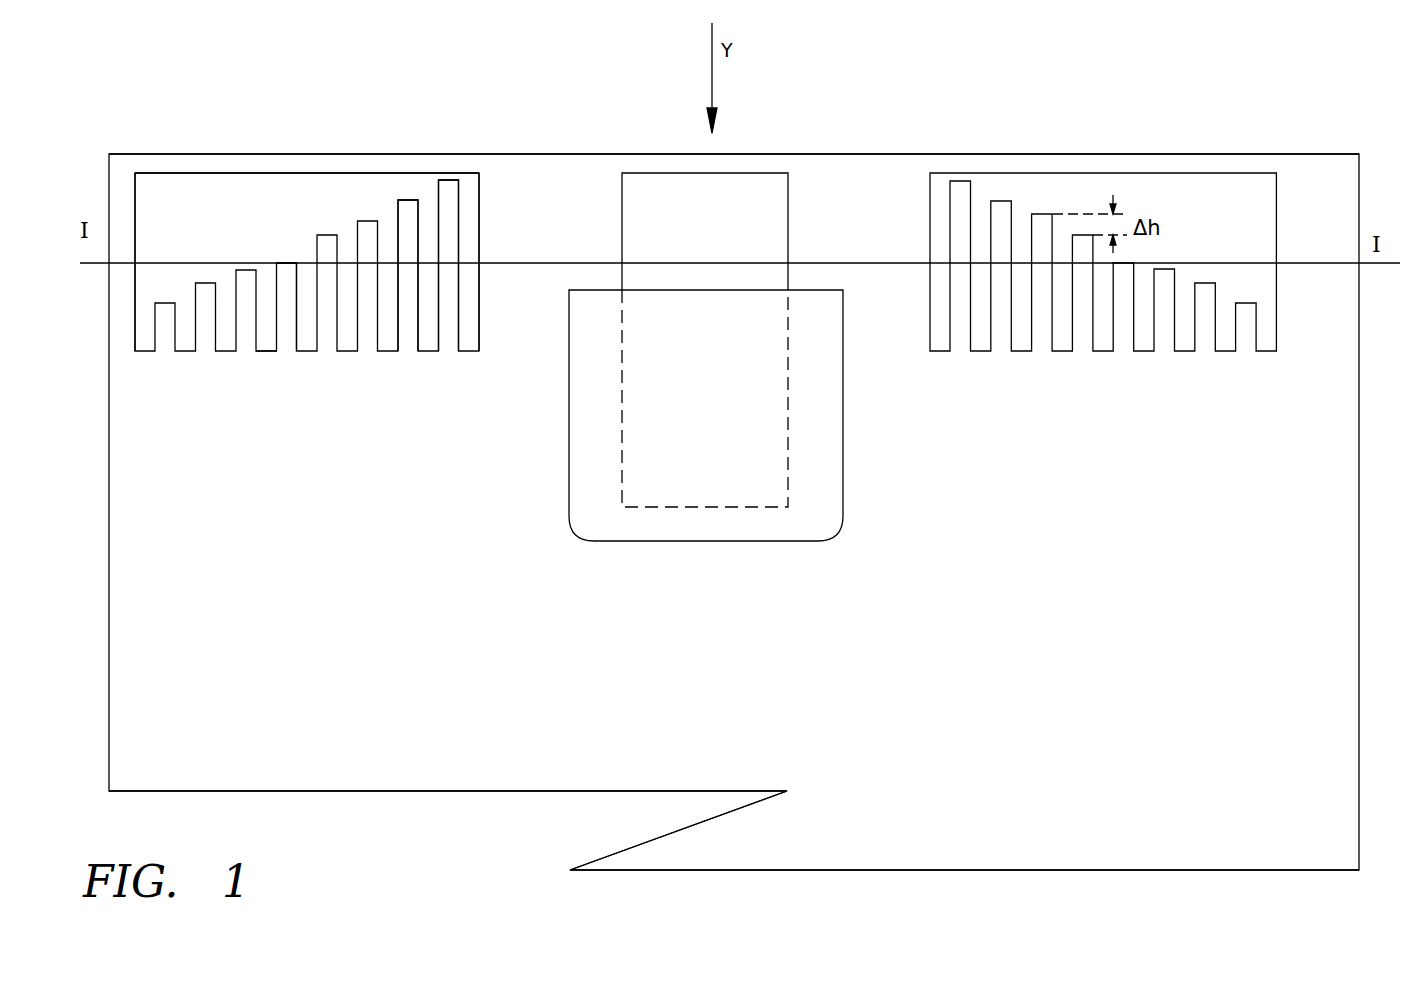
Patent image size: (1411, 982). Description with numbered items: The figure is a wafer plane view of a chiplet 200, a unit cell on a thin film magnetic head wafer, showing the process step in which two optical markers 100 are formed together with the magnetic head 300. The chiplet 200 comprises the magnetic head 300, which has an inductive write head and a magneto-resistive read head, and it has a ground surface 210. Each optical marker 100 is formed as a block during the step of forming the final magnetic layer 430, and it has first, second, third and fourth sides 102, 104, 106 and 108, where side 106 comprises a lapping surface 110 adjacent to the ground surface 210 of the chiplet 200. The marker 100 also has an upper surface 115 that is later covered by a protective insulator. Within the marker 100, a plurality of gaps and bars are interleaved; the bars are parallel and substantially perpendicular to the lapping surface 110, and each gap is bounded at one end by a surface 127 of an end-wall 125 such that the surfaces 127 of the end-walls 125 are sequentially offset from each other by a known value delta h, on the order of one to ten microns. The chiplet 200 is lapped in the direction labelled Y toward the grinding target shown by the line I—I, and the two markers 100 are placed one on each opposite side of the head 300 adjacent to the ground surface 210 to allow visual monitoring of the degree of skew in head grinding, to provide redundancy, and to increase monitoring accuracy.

The optical marker 100 is at (116, 185).
The first side 102 is at (135, 303).
The second side 104 is at (482, 237).
The third side 106 is at (208, 183).
The fourth side 108 is at (268, 353).
The lapping surface 110 is at (285, 173).
The upper surface 115 is at (290, 200).
The end-wall 125 is at (407, 200).
The surface of end-wall 127 is at (414, 200).
The chiplet 200 is at (363, 808).
The ground surface 210 is at (808, 154).
The magnetic head 300 is at (622, 190).
The final magnetic layer 430 is at (843, 297).